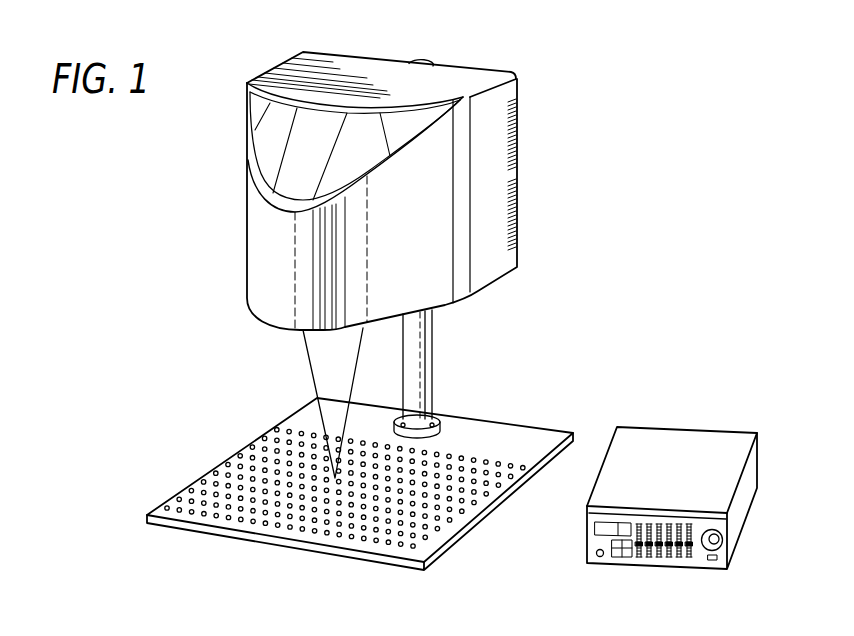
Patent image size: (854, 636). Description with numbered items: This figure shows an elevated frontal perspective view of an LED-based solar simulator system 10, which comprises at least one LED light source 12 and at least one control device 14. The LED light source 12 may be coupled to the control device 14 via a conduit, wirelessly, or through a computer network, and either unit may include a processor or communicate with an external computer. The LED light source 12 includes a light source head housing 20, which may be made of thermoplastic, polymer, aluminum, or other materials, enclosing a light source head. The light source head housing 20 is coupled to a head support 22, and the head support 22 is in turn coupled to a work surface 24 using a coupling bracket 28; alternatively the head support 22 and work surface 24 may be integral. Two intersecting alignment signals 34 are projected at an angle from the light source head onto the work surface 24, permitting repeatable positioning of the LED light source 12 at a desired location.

The LED-based solar simulator system 10 is at (668, 180).
The LED light source 12 is at (267, 250).
The control device 14 is at (687, 455).
The light source head housing 20 is at (467, 80).
The head support 22 is at (413, 60).
The work surface 24 is at (530, 440).
The coupling bracket 28 is at (456, 421).
The alignment signal 34 is at (310, 362).